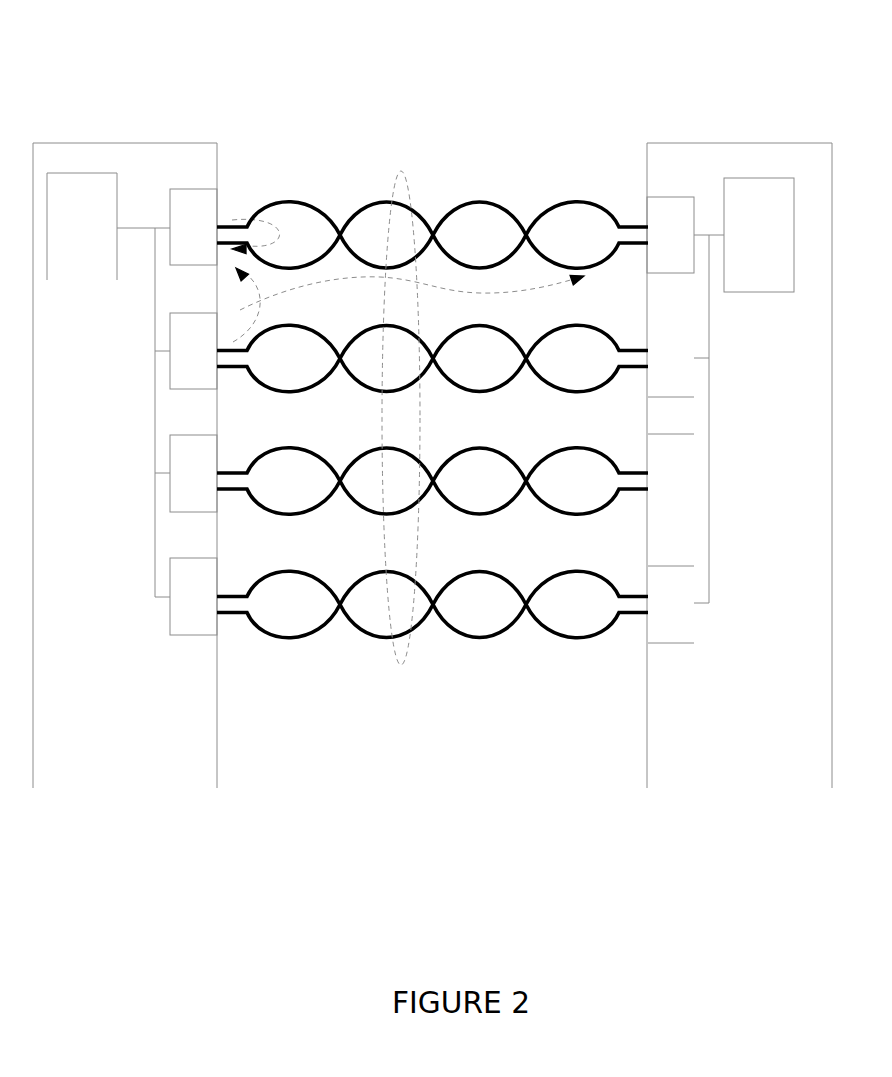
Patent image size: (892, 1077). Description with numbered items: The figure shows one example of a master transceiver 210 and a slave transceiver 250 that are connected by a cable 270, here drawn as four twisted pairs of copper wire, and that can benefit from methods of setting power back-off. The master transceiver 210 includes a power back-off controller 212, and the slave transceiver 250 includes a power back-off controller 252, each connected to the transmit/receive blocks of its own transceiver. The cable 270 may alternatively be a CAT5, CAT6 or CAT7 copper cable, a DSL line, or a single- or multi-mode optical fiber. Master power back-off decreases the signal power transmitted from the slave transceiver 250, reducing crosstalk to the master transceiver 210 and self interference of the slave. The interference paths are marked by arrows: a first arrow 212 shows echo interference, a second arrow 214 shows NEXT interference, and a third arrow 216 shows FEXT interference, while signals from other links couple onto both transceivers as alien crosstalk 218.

The master transceiver 210 is at (135, 736).
The power back-off controller 212 is at (72, 256).
The second arrow 214 is at (260, 310).
The third arrow 216 is at (467, 292).
The alien crosstalk 218 is at (293, 185).
The slave transceiver 250 is at (757, 738).
The power back-off controller 252 is at (749, 265).
The cable 270 is at (402, 172).